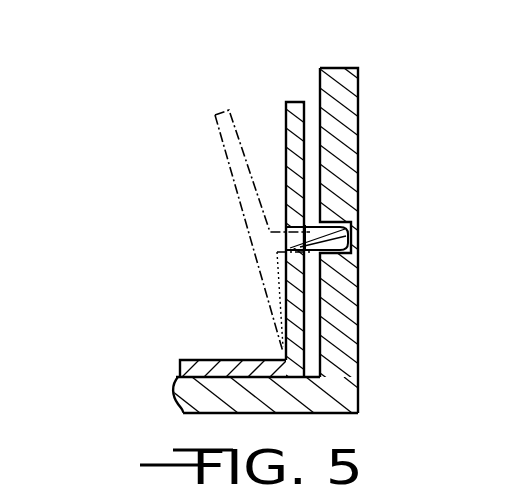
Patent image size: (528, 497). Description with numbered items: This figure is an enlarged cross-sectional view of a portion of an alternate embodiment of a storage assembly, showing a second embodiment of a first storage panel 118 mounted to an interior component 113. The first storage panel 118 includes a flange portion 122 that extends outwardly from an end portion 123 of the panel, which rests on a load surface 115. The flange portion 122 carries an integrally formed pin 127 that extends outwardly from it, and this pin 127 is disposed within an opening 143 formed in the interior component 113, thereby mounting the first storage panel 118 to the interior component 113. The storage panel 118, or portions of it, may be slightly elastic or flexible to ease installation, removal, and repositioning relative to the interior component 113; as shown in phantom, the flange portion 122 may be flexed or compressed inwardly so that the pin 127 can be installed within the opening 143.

The interior component 113 is at (360, 127).
The load surface 115 is at (306, 376).
The first storage panel 118 is at (262, 118).
The flange portion 122 is at (233, 185).
The end portion 123 is at (227, 360).
The pin 127 is at (336, 218).
The opening 143 is at (340, 245).